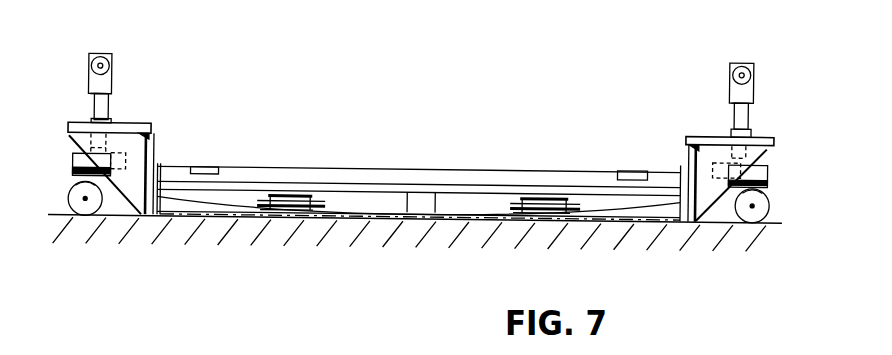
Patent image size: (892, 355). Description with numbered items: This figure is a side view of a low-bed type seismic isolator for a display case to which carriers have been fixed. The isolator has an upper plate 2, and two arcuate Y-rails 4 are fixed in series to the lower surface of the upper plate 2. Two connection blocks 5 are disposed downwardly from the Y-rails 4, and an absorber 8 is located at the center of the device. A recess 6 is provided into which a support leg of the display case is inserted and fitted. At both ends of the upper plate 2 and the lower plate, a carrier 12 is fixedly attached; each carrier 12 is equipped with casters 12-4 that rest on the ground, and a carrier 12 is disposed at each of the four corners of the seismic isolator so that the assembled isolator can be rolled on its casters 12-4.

The upper plate 2 is at (312, 178).
The arcuate Y-rails 4 is at (250, 190).
The connection blocks 5 is at (280, 208).
The recess 6 is at (205, 165).
The absorber 8 is at (418, 205).
The carrier 12 is at (697, 129).
The casters 12-4 is at (762, 188).